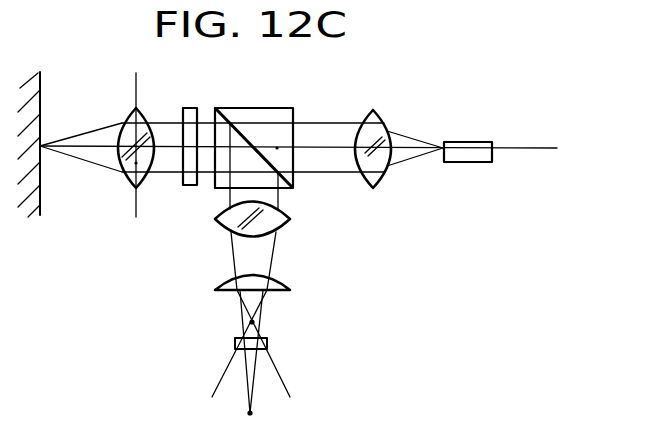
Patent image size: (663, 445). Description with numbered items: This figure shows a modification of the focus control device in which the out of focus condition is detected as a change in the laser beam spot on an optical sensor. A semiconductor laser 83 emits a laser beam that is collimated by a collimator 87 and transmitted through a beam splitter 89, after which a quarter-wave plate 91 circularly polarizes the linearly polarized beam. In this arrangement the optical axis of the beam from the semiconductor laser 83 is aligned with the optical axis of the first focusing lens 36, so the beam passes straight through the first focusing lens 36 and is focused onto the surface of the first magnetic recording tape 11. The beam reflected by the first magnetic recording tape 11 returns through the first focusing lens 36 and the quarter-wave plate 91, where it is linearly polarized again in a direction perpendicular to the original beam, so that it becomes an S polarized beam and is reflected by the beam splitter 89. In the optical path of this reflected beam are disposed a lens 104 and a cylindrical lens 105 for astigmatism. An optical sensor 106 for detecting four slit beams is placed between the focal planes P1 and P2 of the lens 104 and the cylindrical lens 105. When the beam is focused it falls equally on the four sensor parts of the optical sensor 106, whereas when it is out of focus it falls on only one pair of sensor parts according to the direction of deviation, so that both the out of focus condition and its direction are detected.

The first magnetic recording tape 11 is at (40, 73).
The first focusing lens 36 is at (122, 119).
The quarter-wave plate 91 is at (185, 108).
The beam splitter 89 is at (263, 108).
The collimator 87 is at (371, 113).
The semiconductor laser 83 is at (457, 163).
The lens 104 is at (279, 225).
The cylindrical lens 105 is at (288, 288).
The optical sensor 106 is at (235, 343).
The focal plane P1 is at (252, 322).
The focal plane P2 is at (250, 413).